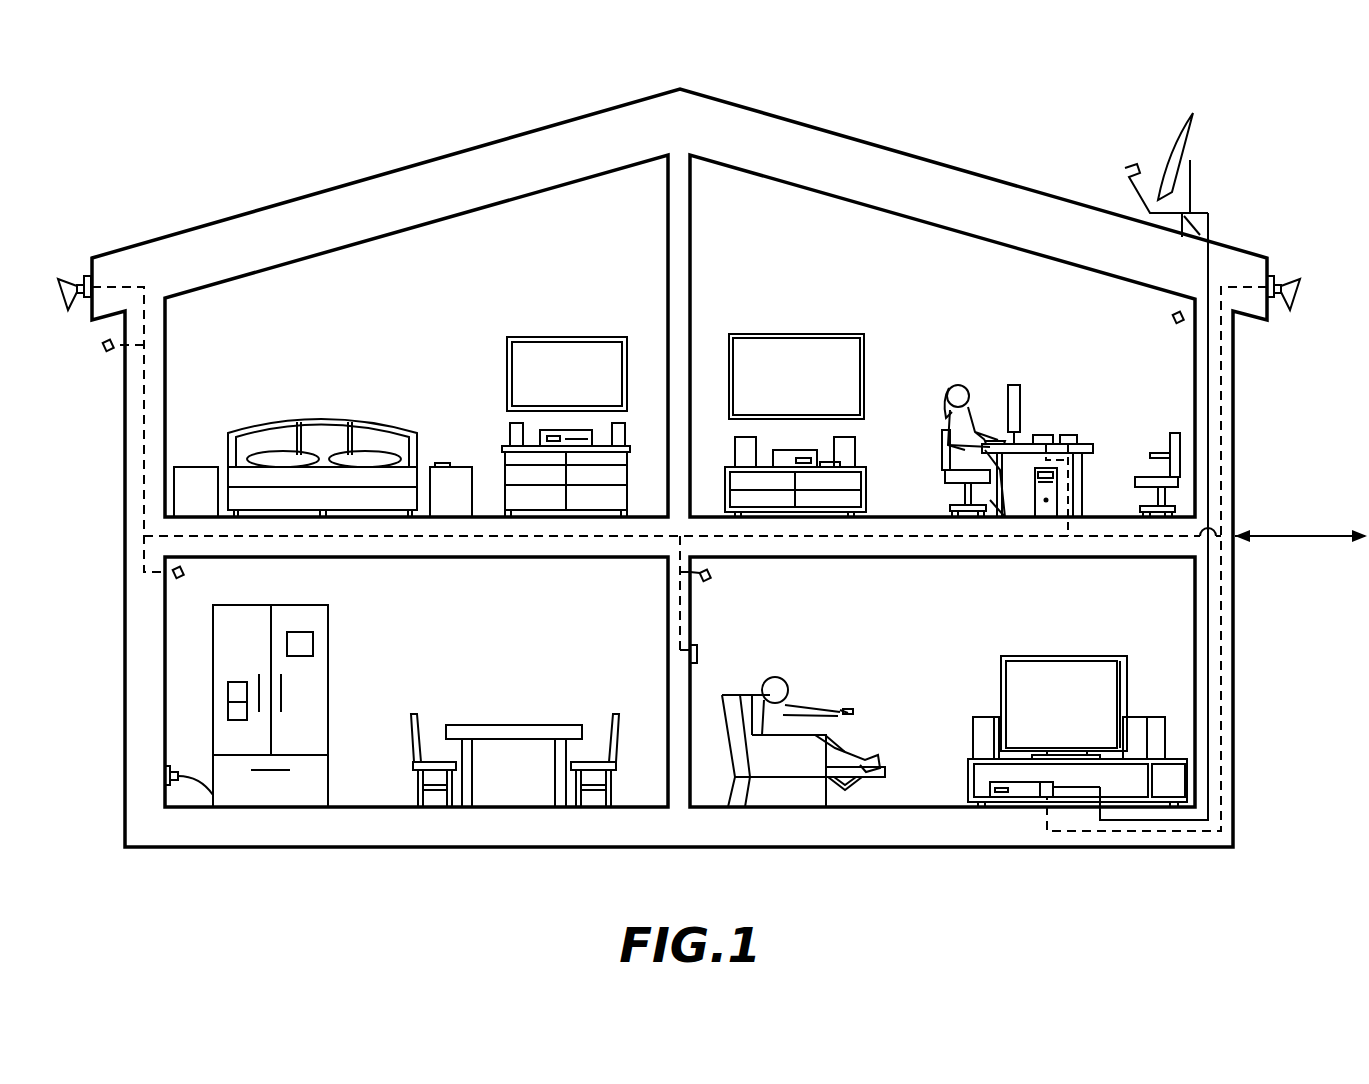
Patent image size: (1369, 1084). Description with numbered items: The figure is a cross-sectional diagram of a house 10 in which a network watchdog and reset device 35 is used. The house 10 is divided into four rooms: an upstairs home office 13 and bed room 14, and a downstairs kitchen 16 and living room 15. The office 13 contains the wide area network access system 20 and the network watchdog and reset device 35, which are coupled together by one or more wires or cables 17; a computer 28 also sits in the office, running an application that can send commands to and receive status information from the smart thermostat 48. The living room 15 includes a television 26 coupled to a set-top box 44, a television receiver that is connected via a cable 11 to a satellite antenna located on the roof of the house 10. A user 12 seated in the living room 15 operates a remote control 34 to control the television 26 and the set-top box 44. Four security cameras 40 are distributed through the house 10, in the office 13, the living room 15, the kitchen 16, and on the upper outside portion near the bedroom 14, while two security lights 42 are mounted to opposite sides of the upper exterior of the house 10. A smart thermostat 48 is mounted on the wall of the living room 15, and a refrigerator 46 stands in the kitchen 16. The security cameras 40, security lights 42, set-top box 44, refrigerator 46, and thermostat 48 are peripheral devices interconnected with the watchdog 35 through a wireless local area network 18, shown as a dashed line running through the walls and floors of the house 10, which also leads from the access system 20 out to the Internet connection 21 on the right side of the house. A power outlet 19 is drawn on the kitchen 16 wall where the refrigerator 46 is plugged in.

The house 10 is at (343, 87).
The cable 11 is at (1210, 260).
The user 12 is at (937, 420).
The home office 13 is at (964, 311).
The bed room 14 is at (412, 326).
The living room 15 is at (907, 612).
The kitchen 16 is at (481, 631).
The wires or cables 17 is at (1072, 463).
The wireless local area network 18 is at (144, 437).
The power outlet 19 is at (187, 790).
The wide area network access system 20 is at (1048, 435).
The internet connection 21 is at (1305, 540).
The television 26 is at (1075, 668).
The computer 28 is at (1060, 489).
The remote control 34 is at (847, 709).
The network watchdog and reset device 35 is at (1073, 435).
The security camera 40 is at (109, 352).
The security light 42 is at (73, 284).
The set-top box 44 is at (990, 785).
The refrigerator 46 is at (323, 623).
The smart thermostat 48 is at (700, 652).